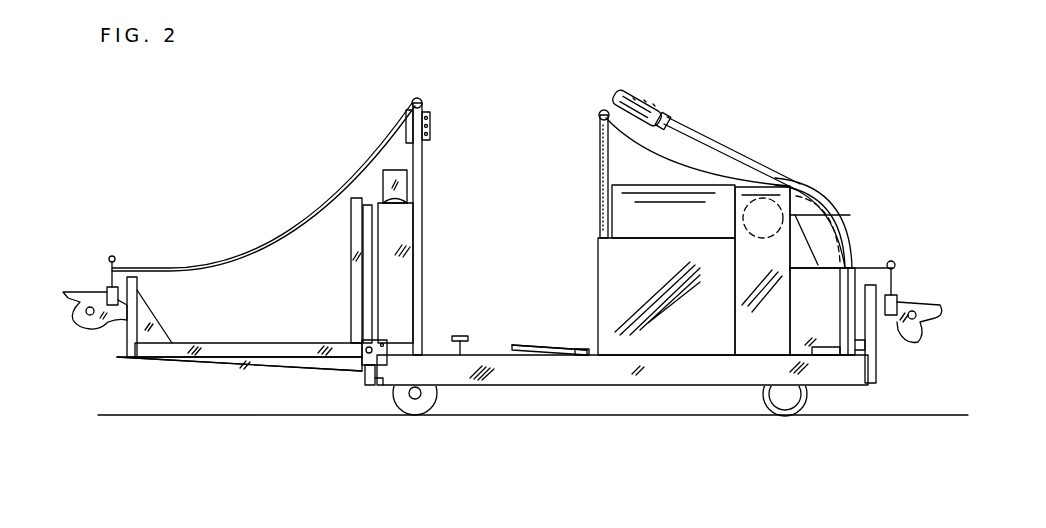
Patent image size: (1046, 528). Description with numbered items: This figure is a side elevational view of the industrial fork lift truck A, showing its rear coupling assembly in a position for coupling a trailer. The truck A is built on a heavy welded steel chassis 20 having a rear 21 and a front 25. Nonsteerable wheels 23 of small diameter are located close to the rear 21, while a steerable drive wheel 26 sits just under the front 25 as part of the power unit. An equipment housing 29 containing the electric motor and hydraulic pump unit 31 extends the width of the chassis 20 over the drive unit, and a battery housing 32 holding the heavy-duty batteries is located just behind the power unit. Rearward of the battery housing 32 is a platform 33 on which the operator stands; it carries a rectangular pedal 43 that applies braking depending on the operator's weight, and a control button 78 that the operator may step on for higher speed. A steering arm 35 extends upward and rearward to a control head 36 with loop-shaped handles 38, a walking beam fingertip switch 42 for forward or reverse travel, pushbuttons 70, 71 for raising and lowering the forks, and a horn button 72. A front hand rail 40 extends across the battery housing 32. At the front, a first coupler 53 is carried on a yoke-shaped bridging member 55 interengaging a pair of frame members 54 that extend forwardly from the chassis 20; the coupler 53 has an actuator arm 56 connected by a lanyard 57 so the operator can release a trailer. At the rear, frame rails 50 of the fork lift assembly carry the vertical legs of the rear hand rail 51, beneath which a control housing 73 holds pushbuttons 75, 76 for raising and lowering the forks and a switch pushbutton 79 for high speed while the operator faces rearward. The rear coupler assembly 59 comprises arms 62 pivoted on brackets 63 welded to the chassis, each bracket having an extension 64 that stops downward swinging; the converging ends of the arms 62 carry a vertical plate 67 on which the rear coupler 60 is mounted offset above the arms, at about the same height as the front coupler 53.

The chassis 20 is at (549, 388).
The rear of the chassis 21 is at (366, 366).
The nonsteerable wheels 23 is at (437, 395).
The front of the chassis 25 is at (872, 382).
The steerable drive wheel 26 is at (742, 390).
The equipment housing 29 is at (815, 214).
The electric motor and hydraulic pump unit 31 is at (826, 196).
The battery housing 32 is at (598, 258).
The platform 33 is at (500, 352).
The steering arm 35 is at (800, 172).
The control head 36 is at (604, 110).
The loop-shaped handles 38 is at (668, 110).
The front hand rail 40 is at (600, 193).
The walking beam fingertip switch 42 is at (624, 94).
The pedal 43 is at (530, 345).
The frame rails 50 is at (400, 234).
The rear hand rail 51 is at (421, 102).
The first coupler 53 is at (905, 302).
The frame members 54 is at (832, 356).
The bridging member 55 is at (878, 350).
The actuator arm 56 is at (895, 266).
The lanyard 57 is at (688, 165).
The rear coupler assembly 59 is at (192, 246).
The rear coupler 60 is at (104, 292).
The arms 62 is at (112, 262).
The brackets 63 is at (380, 343).
The extension 64 is at (350, 369).
The vertical plate 67 is at (137, 288).
The pushbutton 70 is at (637, 98).
The pushbutton 71 is at (646, 102).
The horn button 72 is at (655, 104).
The control housing 73 is at (430, 148).
The pushbutton 75 is at (430, 120).
The pushbutton 76 is at (430, 128).
The control button 78 is at (465, 336).
The switch pushbutton 79 is at (430, 136).
The industrial fork lift truck A is at (768, 142).